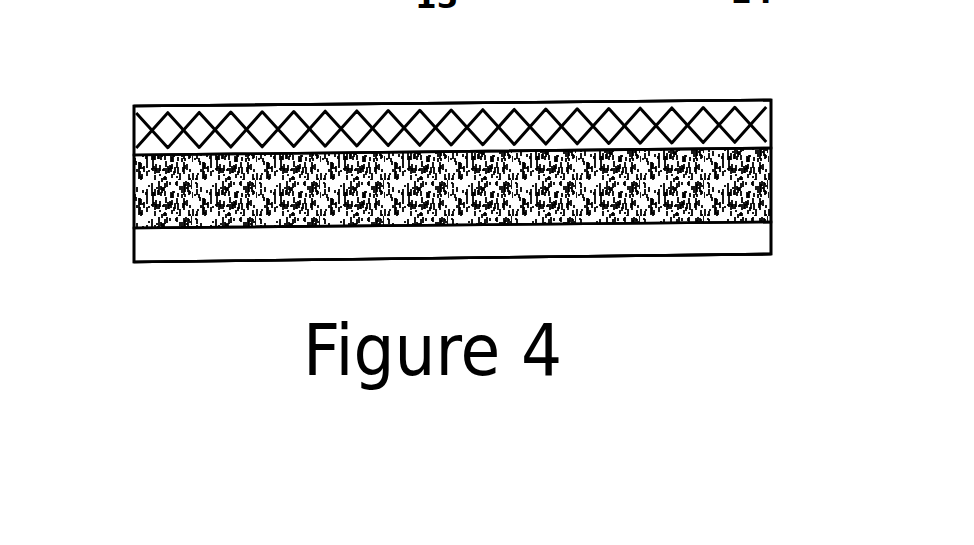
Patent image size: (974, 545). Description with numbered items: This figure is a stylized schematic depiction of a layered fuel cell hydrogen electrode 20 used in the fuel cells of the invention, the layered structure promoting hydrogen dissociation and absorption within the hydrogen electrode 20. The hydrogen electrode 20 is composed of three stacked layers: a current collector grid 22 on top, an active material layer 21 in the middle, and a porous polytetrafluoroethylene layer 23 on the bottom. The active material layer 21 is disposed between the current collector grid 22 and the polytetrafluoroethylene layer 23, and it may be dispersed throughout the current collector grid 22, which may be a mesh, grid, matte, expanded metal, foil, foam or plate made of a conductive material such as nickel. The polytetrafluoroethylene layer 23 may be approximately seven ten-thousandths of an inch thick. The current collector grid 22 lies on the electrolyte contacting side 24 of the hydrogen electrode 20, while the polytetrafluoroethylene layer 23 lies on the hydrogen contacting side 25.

The hydrogen electrode 20 is at (788, 305).
The active material layer 21 is at (763, 177).
The current collector grid 22 is at (757, 123).
The porous polytetrafluoroethylene layer 23 is at (755, 242).
The electrolyte contacting side 24 is at (556, 93).
The hydrogen contacting side 25 is at (636, 265).